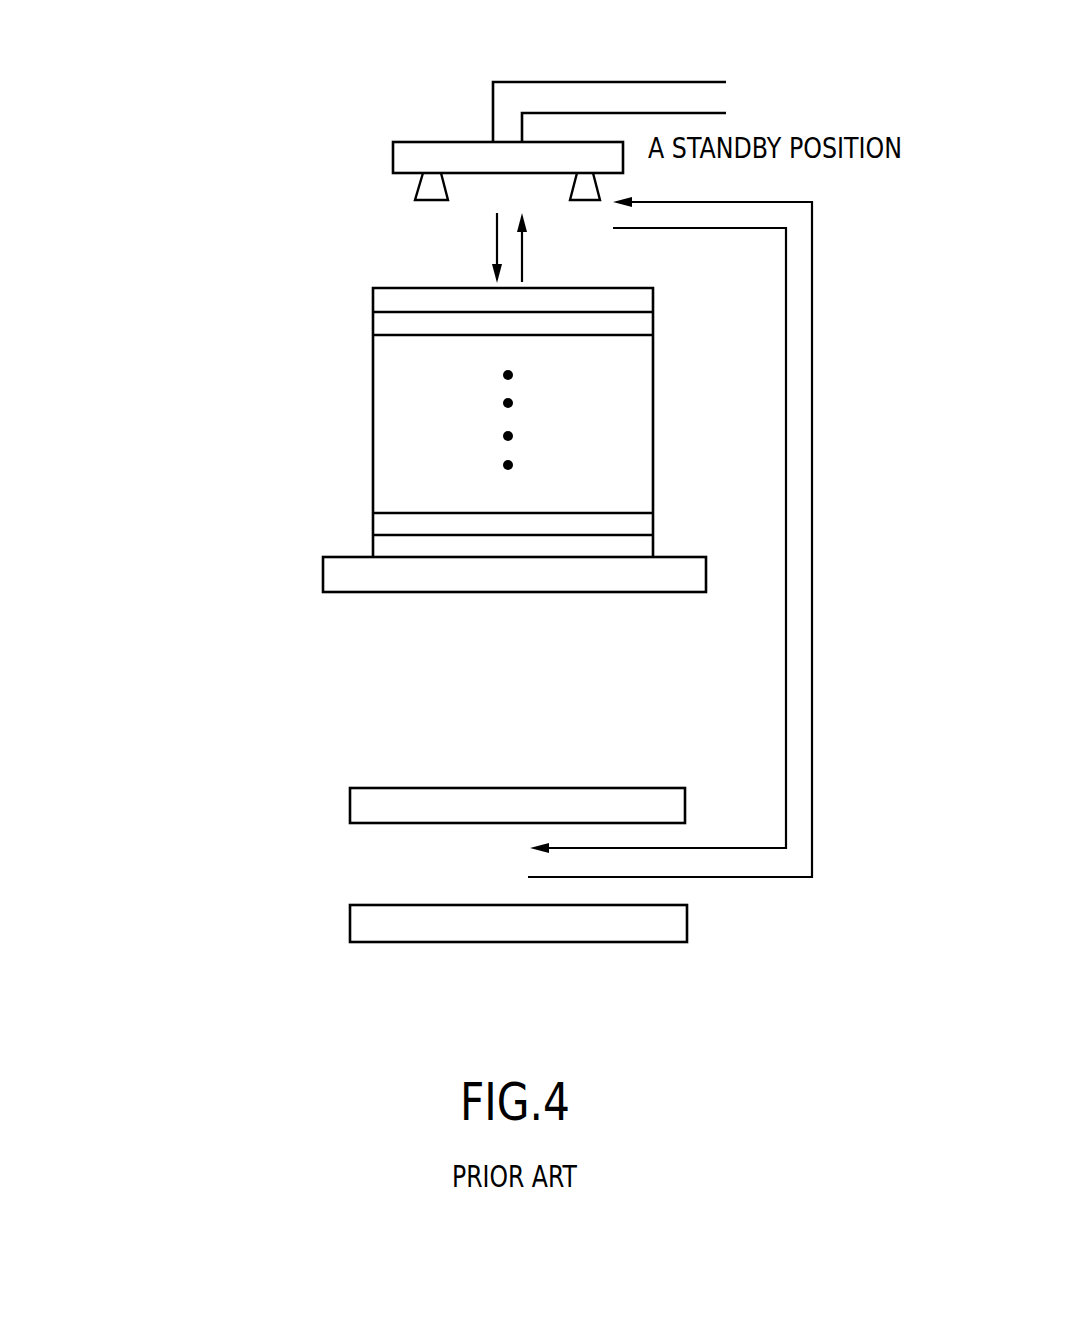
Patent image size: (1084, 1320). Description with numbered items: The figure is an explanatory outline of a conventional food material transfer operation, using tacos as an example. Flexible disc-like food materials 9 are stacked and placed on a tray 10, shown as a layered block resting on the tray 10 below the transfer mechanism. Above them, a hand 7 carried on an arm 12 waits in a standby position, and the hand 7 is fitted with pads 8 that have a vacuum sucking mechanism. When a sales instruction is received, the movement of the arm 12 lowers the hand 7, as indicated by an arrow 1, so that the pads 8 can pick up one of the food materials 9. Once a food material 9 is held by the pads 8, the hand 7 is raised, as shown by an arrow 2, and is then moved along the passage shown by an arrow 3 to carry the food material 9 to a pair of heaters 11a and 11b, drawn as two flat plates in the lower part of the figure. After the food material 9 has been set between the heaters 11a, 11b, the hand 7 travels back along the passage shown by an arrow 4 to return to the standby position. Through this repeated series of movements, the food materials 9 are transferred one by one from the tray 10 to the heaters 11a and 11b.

The arrow 1 is at (481, 247).
The arrow 2 is at (535, 247).
The arrow 3 is at (670, 537).
The arrow 4 is at (696, 540).
The hand 7 is at (393, 152).
The pads 8 is at (425, 200).
The food materials 9 is at (373, 310).
The tray 10 is at (343, 592).
The heater 11a is at (350, 808).
The heater 11b is at (350, 925).
The arm 12 is at (517, 82).